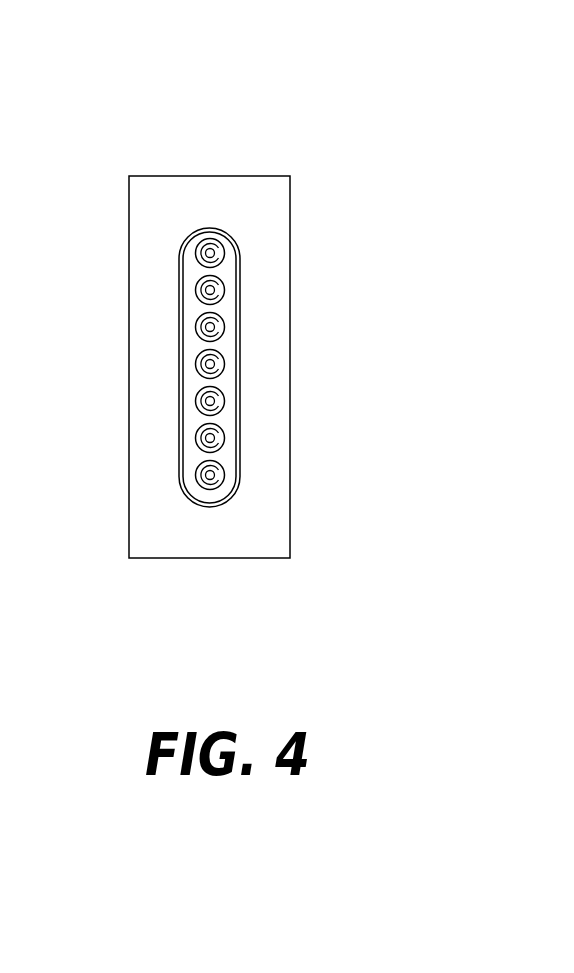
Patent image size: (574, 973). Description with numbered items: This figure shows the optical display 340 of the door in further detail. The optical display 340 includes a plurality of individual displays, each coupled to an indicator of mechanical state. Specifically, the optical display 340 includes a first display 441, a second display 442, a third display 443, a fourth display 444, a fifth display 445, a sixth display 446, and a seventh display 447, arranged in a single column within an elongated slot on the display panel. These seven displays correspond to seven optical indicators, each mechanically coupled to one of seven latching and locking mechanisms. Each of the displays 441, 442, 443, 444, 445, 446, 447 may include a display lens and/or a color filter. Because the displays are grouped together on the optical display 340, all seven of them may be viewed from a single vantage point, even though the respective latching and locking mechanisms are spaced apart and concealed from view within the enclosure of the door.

The optical display 340 is at (134, 103).
The first display 441 is at (214, 257).
The second display 442 is at (214, 294).
The third display 443 is at (214, 331).
The fourth display 444 is at (214, 367).
The fifth display 445 is at (214, 402).
The sixth display 446 is at (214, 439).
The seventh display 447 is at (214, 476).